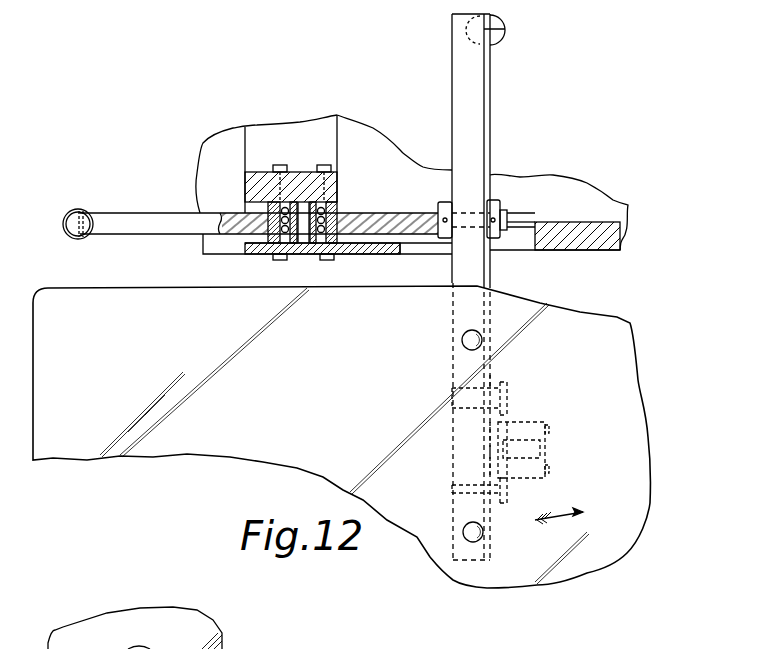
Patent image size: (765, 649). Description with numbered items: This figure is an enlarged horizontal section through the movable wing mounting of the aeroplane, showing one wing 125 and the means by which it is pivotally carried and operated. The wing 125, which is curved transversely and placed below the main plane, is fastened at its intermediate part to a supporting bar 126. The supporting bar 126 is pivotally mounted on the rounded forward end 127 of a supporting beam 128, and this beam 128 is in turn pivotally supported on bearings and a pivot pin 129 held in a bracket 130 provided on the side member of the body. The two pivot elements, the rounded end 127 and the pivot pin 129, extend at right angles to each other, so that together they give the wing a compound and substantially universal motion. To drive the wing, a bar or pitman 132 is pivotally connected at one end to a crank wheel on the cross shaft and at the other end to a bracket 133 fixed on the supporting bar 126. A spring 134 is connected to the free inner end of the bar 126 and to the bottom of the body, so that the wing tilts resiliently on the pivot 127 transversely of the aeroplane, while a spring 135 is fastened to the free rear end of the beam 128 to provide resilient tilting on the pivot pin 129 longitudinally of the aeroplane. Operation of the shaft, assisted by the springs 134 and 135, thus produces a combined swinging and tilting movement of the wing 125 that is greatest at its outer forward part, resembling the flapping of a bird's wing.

The wing 125 is at (341, 437).
The supporting bar 126 is at (482, 275).
The rounded forward end 127 is at (508, 216).
The supporting beam 128 is at (398, 216).
The pivot pin 129 is at (301, 205).
The bracket 130 is at (337, 198).
The bar or pitman 132 is at (550, 443).
The bracket 133 is at (532, 422).
The spring 134 is at (497, 32).
The spring 135 is at (79, 210).